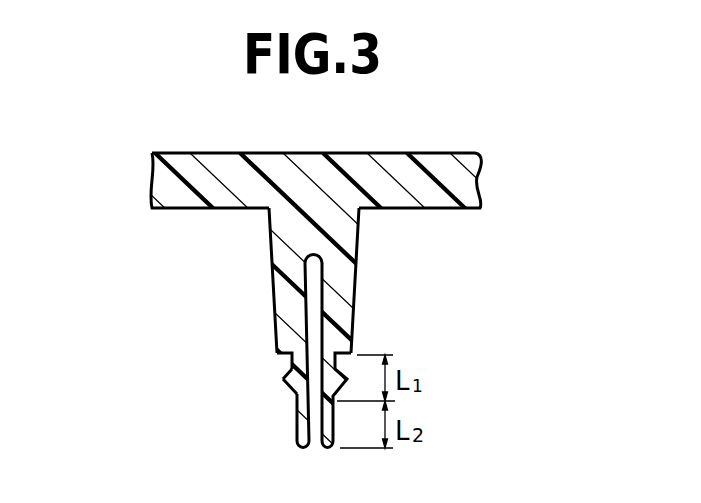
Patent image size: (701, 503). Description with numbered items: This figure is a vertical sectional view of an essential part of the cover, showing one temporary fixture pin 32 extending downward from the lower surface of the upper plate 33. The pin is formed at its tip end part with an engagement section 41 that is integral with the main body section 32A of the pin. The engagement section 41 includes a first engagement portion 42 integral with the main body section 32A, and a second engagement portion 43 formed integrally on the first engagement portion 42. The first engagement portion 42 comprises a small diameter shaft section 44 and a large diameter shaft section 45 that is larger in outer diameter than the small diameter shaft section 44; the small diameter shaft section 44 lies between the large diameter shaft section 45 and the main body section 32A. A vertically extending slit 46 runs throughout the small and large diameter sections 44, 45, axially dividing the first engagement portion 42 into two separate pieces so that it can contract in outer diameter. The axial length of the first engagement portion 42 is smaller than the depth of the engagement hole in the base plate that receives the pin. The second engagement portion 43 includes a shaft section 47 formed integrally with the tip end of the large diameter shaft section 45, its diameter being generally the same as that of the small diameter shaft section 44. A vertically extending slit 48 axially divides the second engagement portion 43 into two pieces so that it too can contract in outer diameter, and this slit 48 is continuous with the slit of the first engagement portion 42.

The upper plate 33 is at (188, 152).
The temporary fixture pin 32 is at (241, 250).
The main body section 32A is at (358, 250).
The engagement section 41 is at (202, 393).
The small diameter shaft section 44 is at (287, 362).
The first engagement portion 42 is at (215, 379).
The large diameter shaft section 45 is at (284, 381).
The slit 46 is at (313, 391).
The second engagement portion 43 is at (215, 439).
The shaft section 47 is at (315, 418).
The slit 48 is at (302, 442).